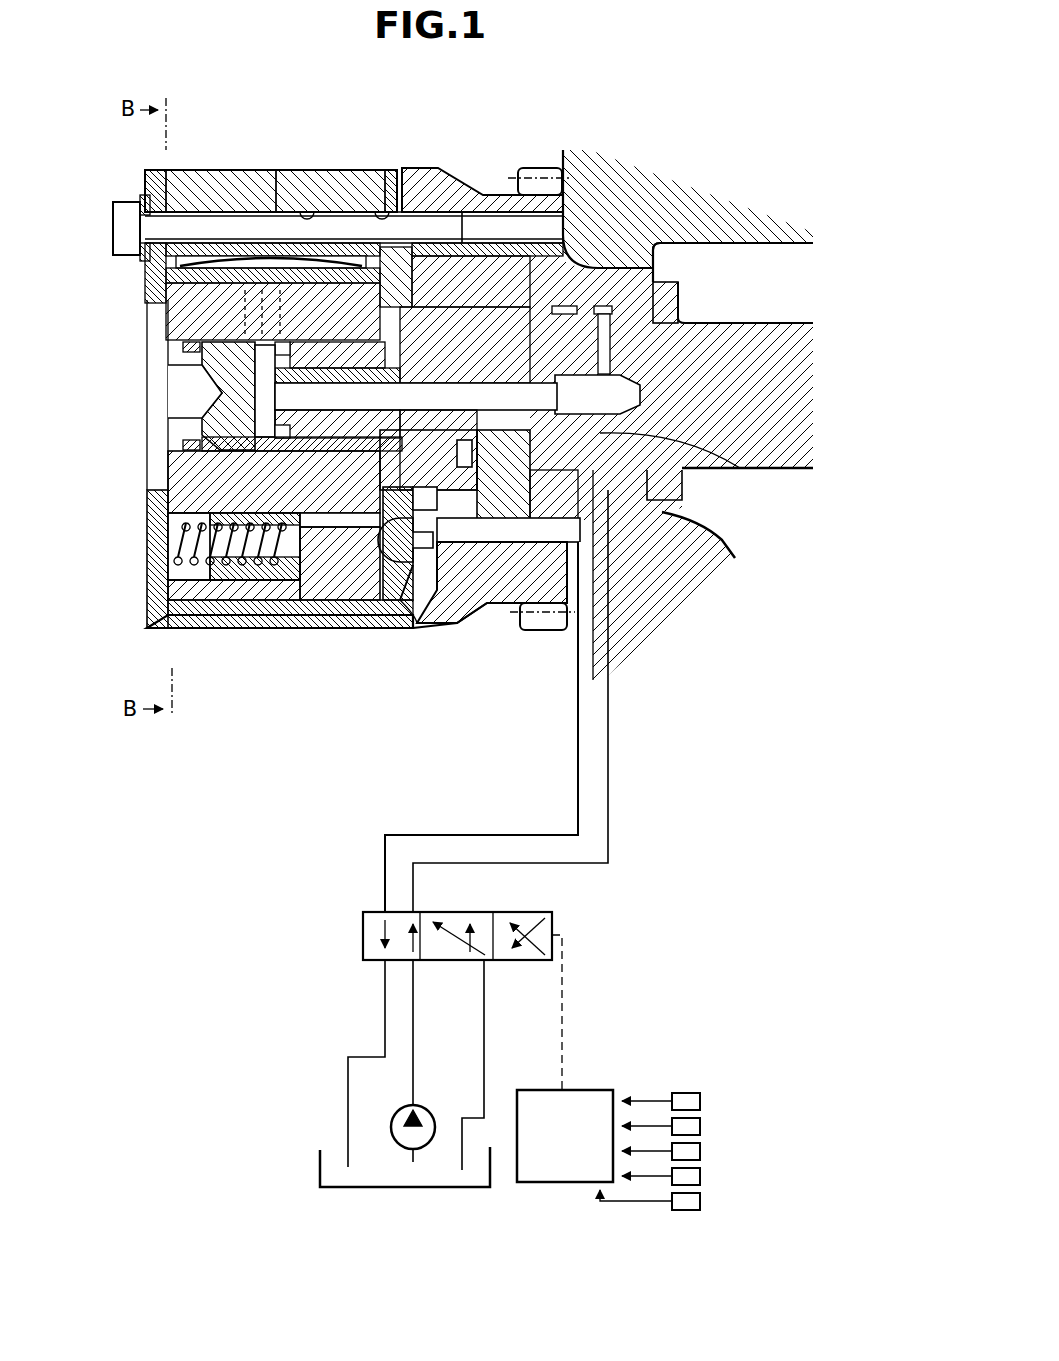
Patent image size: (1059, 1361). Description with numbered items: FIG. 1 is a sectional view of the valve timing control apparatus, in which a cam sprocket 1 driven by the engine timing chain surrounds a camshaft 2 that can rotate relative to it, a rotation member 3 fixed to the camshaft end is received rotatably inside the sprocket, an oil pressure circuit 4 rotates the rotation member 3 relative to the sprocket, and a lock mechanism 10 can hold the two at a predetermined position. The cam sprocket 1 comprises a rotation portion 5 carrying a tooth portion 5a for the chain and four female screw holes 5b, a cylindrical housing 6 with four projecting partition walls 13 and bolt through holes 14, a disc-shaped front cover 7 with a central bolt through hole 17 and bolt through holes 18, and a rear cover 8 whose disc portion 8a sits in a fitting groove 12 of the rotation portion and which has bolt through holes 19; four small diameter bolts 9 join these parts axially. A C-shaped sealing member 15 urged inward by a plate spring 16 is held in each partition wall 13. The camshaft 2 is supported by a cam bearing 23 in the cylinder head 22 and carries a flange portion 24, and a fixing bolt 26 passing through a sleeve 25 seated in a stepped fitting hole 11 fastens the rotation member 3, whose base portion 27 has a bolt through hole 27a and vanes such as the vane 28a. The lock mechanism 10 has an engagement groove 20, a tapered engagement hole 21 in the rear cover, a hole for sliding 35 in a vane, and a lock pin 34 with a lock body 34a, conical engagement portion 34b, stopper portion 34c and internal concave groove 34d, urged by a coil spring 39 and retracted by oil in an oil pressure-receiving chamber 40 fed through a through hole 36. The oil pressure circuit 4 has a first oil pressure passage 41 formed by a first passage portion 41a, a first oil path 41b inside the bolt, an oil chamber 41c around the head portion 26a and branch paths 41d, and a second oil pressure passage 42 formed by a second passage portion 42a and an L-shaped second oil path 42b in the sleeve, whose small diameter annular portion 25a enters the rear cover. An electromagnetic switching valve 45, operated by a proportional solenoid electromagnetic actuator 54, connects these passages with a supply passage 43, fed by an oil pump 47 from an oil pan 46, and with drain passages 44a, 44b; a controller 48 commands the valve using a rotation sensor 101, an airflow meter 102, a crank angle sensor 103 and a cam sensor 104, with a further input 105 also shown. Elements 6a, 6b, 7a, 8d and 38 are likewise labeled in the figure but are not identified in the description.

The cam sprocket 1 is at (277, 161).
The camshaft 2 is at (804, 474).
The rotation member 3 is at (152, 528).
The oil pressure circuit 4 is at (620, 794).
The rotation portion 5 is at (455, 168).
The tooth portion 5a is at (540, 168).
The female screw holes 5b is at (572, 210).
The housing 6 is at (337, 170).
The housing bore 6a is at (167, 309).
The housing wall 6b is at (615, 250).
The front cover 7 is at (200, 605).
The rotor boss 7a is at (195, 341).
The rear cover 8 is at (388, 612).
The disc portion 8a is at (415, 575).
The sprocket passage 8d is at (300, 475).
The small diameter bolts 9 is at (113, 215).
The lock mechanism 10 is at (353, 628).
The stepped fitting hole 11 is at (455, 580).
The fitting groove 12 is at (407, 168).
The partition walls 13 is at (217, 170).
The bolt through holes 14 is at (246, 170).
The sealing member 15 is at (160, 261).
The plate spring 16 is at (188, 170).
The bolt through hole 17 is at (155, 378).
The bolt through holes 18 is at (124, 202).
The bolt through holes 19 is at (372, 170).
The engagement groove 20 is at (448, 540).
The tapered engagement hole 21 is at (378, 615).
The cylinder head 22 is at (713, 544).
The cam bearing 23 is at (666, 266).
The flange portion 24 is at (556, 624).
The sleeve 25 is at (500, 585).
The small diameter annular portion 25a is at (683, 471).
The fixing bolt 26 is at (313, 170).
The head portion 26a is at (217, 360).
The base portion 27 is at (293, 628).
The bolt through hole 27a is at (210, 447).
The vane 28a is at (170, 628).
The lock pin 34 is at (272, 628).
The lock body 34a is at (160, 494).
The engagement portion 34b is at (435, 660).
The stopper portion 34c is at (175, 629).
The internal concave groove 34d is at (200, 628).
The hole for sliding 35 is at (257, 628).
The through hole 36 is at (212, 615).
The passage 38 is at (380, 345).
The coil spring 39 is at (150, 572).
The oil pressure-receiving chamber 40 is at (172, 543).
The first oil pressure passage 41 is at (608, 832).
The first passage portion 41a is at (530, 352).
The first oil path 41b is at (683, 316).
The oil chamber 41c is at (200, 410).
The branch paths 41d is at (245, 300).
The second oil pressure passage 42 is at (578, 778).
The second passage portion 42a is at (643, 578).
The second oil path 42b is at (740, 468).
The supply passage 43 is at (415, 1030).
The drain passage 44a is at (385, 1015).
The drain passage 44b is at (484, 1043).
The electromagnetic switching valve 45 is at (470, 906).
The oil pan 46 is at (320, 1165).
The oil pump 47 is at (430, 1110).
The controller 48 is at (588, 1090).
The proportional solenoid electromagnetic actuator 54 is at (553, 920).
The rotation sensor 101 is at (700, 1098).
The airflow meter 102 is at (700, 1127).
The crank angle sensor 103 is at (700, 1150).
The cam sensor 104 is at (700, 1175).
The sensor 105 is at (700, 1201).